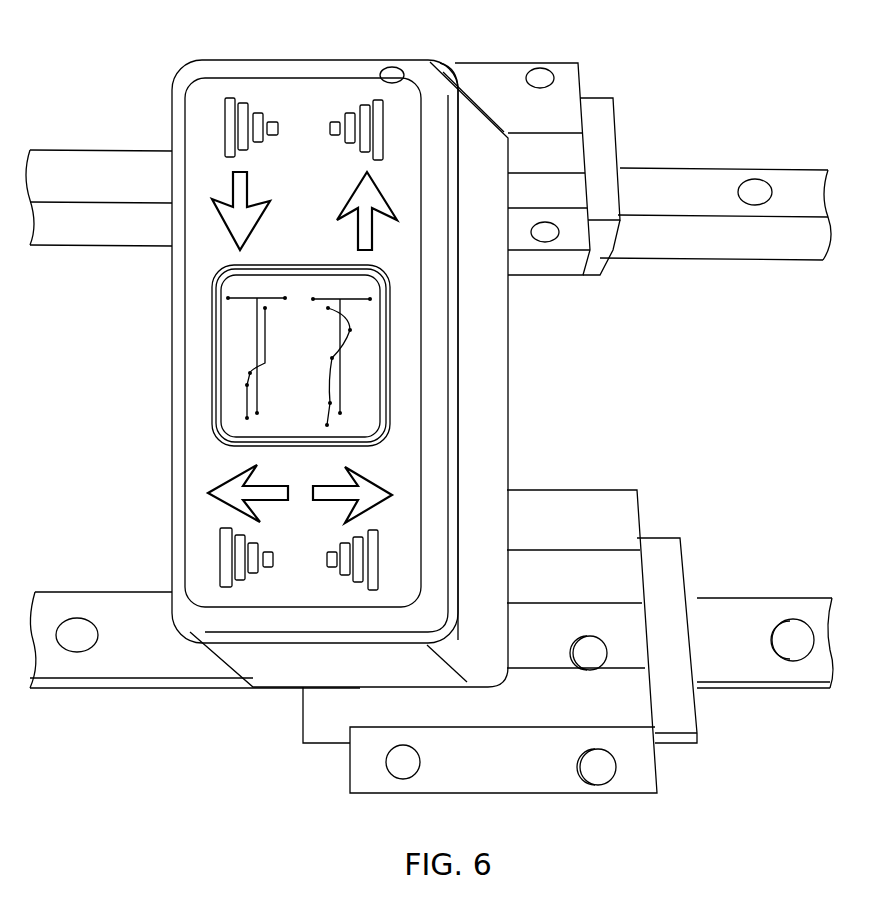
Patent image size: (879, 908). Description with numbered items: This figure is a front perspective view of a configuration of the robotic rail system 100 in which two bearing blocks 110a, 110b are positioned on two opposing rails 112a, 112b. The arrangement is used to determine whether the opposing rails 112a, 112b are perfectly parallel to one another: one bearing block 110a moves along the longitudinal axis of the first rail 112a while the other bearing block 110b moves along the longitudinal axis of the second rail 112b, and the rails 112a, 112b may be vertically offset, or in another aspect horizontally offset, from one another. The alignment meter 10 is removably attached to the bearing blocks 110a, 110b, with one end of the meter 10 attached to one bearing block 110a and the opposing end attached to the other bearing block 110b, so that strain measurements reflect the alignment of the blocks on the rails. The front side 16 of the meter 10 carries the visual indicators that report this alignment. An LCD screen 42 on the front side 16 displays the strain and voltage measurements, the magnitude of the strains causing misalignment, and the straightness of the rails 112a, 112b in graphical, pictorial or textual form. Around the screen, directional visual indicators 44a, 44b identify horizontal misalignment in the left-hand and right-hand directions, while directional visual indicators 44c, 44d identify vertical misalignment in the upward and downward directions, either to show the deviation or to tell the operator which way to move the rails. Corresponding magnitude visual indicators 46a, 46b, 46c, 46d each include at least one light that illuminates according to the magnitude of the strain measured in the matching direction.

The alignment meter 10 is at (540, 393).
The front side 16 is at (170, 380).
The LCD screen 42 is at (385, 352).
The first directional visual indicator 44a is at (397, 220).
The second directional visual indicator 44b is at (213, 208).
The third directional visual indicator 44c is at (392, 495).
The fourth directional visual indicator 44d is at (225, 505).
The first magnitude visual indicator 46a is at (350, 107).
The second magnitude visual indicator 46b is at (245, 92).
The third magnitude visual indicator 46c is at (338, 586).
The fourth magnitude visual indicator 46d is at (250, 592).
The robotic rail system 100 is at (690, 100).
The bearing block 110a is at (500, 73).
The bearing block 110b is at (645, 768).
The first rail 112a is at (718, 177).
The second rail 112b is at (767, 672).